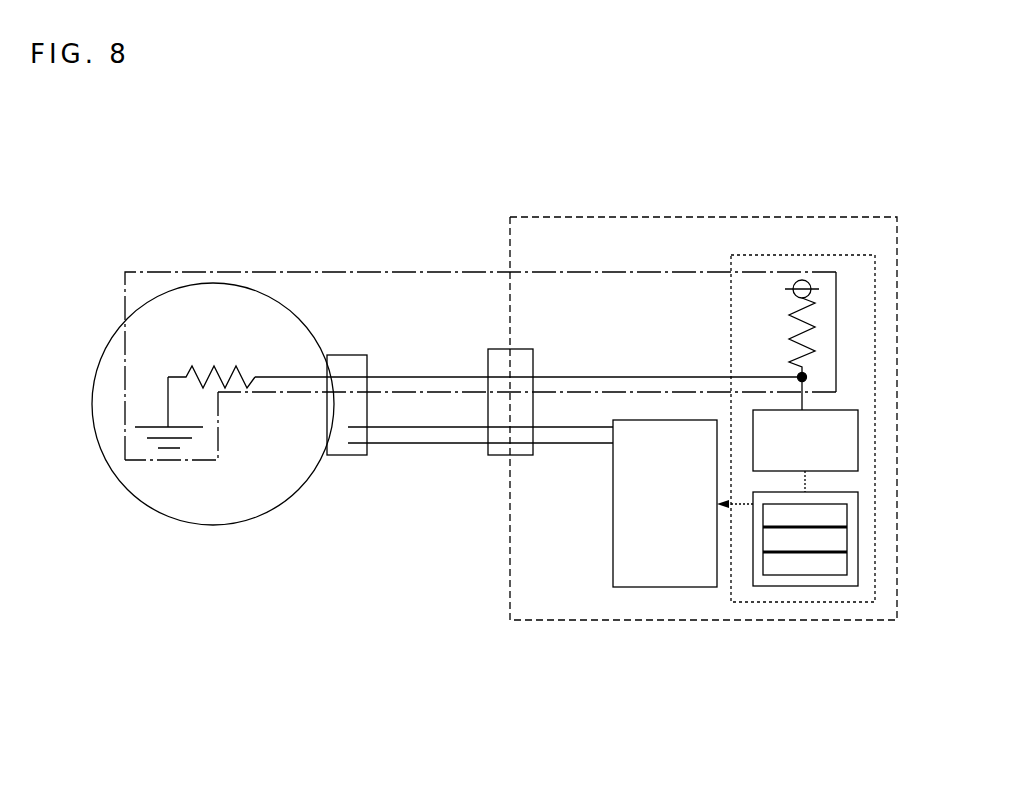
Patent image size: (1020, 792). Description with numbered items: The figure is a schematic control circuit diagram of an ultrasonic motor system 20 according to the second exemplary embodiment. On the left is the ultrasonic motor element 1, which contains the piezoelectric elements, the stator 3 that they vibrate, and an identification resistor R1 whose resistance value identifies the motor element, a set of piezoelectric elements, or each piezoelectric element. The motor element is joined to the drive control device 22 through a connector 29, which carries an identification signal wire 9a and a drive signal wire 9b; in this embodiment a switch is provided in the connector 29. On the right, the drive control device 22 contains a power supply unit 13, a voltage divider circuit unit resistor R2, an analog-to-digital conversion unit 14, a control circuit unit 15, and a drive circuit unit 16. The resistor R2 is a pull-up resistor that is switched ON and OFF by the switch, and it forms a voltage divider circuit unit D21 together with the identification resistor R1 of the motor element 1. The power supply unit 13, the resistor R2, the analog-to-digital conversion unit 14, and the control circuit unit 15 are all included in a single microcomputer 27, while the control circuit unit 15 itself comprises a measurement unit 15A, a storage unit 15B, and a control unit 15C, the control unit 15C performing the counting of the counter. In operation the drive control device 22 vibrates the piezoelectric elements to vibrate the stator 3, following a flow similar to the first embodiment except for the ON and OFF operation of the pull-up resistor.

The ultrasonic motor system 20 is at (130, 162).
The ultrasonic motor element 1 is at (213, 323).
The stator 3 is at (278, 318).
The identification resistor R1 is at (236, 366).
The connector 29 is at (340, 346).
The identification signal wire 9a is at (390, 377).
The drive signal wire 9b is at (389, 430).
The voltage divider circuit unit D21 is at (693, 272).
The microcomputer 27 is at (883, 292).
The drive control device 22 is at (827, 219).
The power supply unit 13 is at (803, 280).
The voltage divider circuit unit resistor R2 is at (787, 313).
The analog-to-digital conversion unit 14 is at (848, 420).
The drive circuit unit 16 is at (669, 575).
The control circuit unit 15 is at (814, 594).
The measurement unit 15A is at (843, 513).
The storage unit 15B is at (768, 545).
The control unit 15C is at (795, 568).